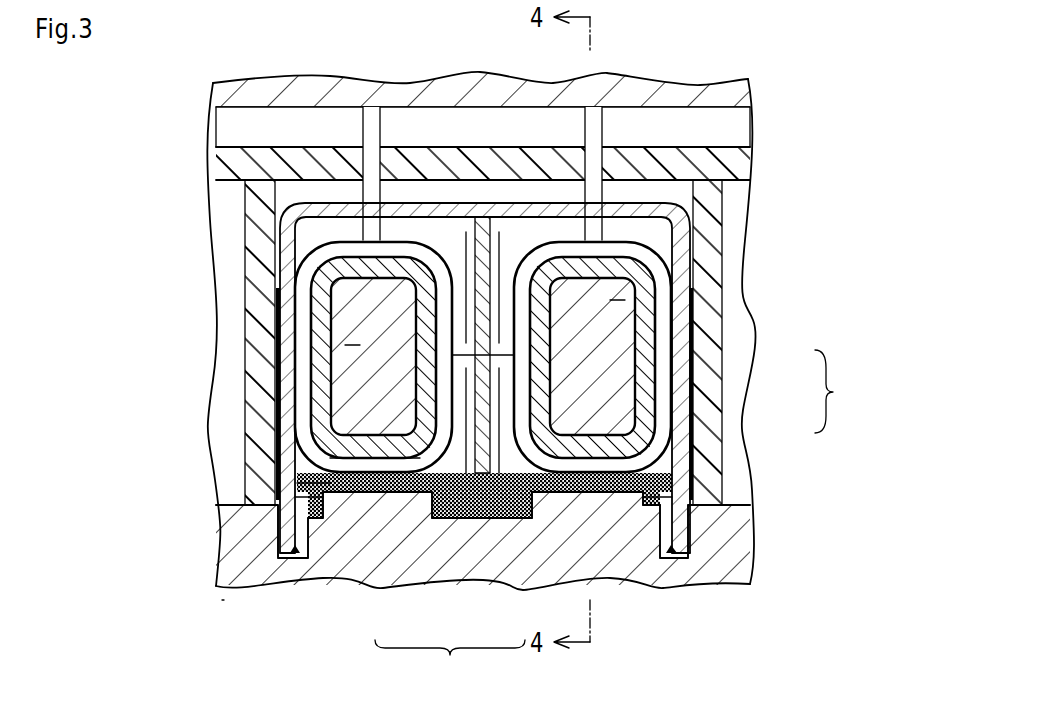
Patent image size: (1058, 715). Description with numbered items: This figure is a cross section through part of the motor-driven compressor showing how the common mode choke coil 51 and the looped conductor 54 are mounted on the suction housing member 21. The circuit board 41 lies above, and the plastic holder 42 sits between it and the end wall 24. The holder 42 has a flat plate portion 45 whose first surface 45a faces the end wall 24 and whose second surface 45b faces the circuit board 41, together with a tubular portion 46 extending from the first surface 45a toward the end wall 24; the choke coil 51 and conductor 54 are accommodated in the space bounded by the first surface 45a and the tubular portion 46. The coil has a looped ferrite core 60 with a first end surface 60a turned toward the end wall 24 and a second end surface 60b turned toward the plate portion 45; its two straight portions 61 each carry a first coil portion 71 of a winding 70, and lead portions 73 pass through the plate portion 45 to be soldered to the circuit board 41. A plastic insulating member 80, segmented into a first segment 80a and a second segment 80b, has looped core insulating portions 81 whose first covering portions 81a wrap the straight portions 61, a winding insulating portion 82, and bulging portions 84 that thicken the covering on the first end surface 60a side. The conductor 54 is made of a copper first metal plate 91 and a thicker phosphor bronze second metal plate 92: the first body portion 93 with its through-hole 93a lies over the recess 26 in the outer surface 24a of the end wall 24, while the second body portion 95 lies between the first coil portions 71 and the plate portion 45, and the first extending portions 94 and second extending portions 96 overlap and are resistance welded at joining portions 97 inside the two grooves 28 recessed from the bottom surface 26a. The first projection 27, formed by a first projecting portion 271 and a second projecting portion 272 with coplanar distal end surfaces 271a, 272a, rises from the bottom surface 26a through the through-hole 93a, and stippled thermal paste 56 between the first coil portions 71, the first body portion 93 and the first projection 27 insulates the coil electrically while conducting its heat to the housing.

The circuit board 41 is at (283, 96).
The holder 42 is at (215, 144).
The plate portion 45 is at (213, 178).
The first surface 45a is at (748, 182).
The second surface 45b is at (670, 147).
The tubular portion 46 is at (243, 203).
The common mode choke coil 51 is at (328, 220).
The conductor 54 is at (620, 194).
The thermal paste 56 is at (553, 486).
The core 60 is at (320, 352).
The first end surface 60a is at (308, 440).
The second end surface 60b is at (305, 300).
The straight portion 61 is at (320, 398).
The winding 70 is at (282, 234).
The first coil portion 71 is at (298, 252).
The lead portion 73 is at (372, 118).
The insulating member 80 is at (658, 391).
The first segment 80a is at (668, 420).
The second segment 80b is at (668, 380).
The core insulating portion 81 is at (345, 345).
The first covering portion 81a is at (485, 322).
The winding insulating portion 82 is at (487, 214).
The bulging portion 84 is at (372, 456).
The first metal plate 91 is at (240, 507).
The second metal plate 92 is at (405, 200).
The first body portion 93 is at (498, 518).
The through-hole 93a is at (297, 483).
The first extending portion 94 is at (318, 560).
The second body portion 95 is at (555, 207).
The second extending portion 96 is at (276, 450).
The joining portion 97 is at (290, 560).
The end wall 24 is at (228, 580).
The suction housing member 21 is at (223, 633).
The outer surface 24a is at (745, 507).
The recess 26 is at (690, 497).
The bottom surface 26a is at (457, 560).
The first projection 27 is at (450, 661).
The first projecting portion 271 is at (403, 560).
The distal end surface 271a is at (377, 560).
The second projecting portion 272 is at (510, 560).
The distal end surface 272a is at (600, 560).
The groove 28 is at (262, 545).